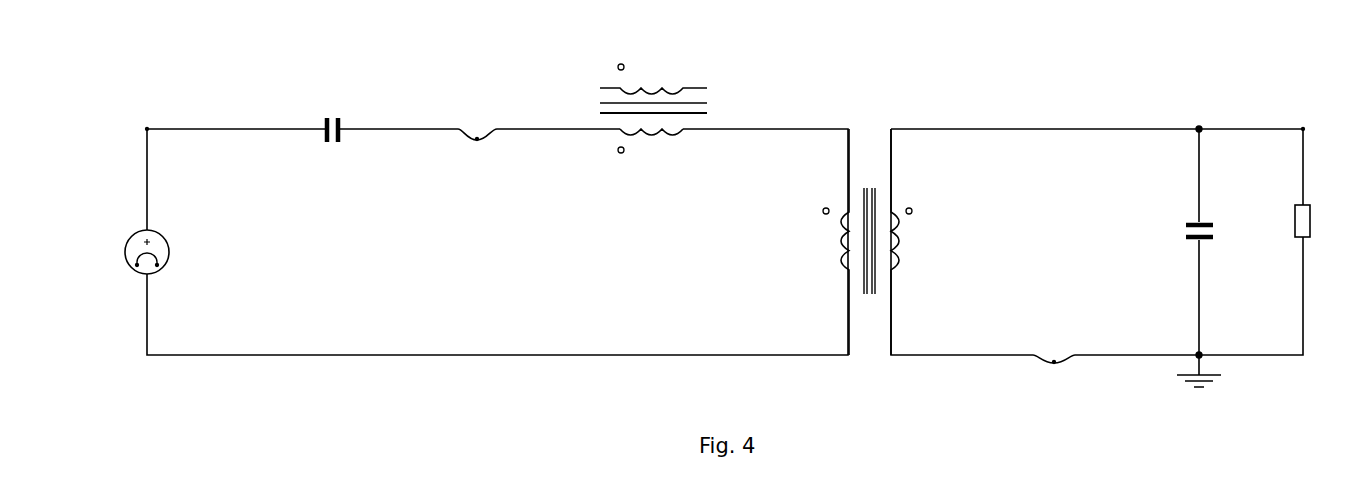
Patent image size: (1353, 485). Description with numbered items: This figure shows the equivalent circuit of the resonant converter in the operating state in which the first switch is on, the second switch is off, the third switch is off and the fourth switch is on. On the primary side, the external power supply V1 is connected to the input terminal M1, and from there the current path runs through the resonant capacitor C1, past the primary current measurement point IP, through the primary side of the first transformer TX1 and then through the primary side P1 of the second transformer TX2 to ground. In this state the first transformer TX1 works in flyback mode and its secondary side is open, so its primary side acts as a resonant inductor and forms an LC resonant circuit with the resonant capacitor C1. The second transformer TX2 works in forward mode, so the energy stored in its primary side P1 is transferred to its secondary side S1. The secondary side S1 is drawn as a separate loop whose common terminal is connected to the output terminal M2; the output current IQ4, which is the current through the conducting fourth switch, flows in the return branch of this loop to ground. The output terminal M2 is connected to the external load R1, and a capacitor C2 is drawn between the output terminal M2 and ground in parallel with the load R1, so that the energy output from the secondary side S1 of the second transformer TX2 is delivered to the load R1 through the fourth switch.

The input terminal M1 is at (144, 119).
The output terminal M2 is at (1290, 119).
The external power supply V1 is at (157, 244).
The resonant capacitor C1 is at (330, 141).
The primary current measurement point IP is at (477, 124).
The first transformer TX1 is at (653, 107).
The second transformer TX2 is at (875, 242).
The primary side of the second transformer P1 is at (826, 242).
The secondary side of the second transformer S1 is at (905, 242).
The output capacitor C2 is at (1210, 242).
The external load R1 is at (1313, 217).
The current at the fourth switch IQ4 is at (1054, 351).